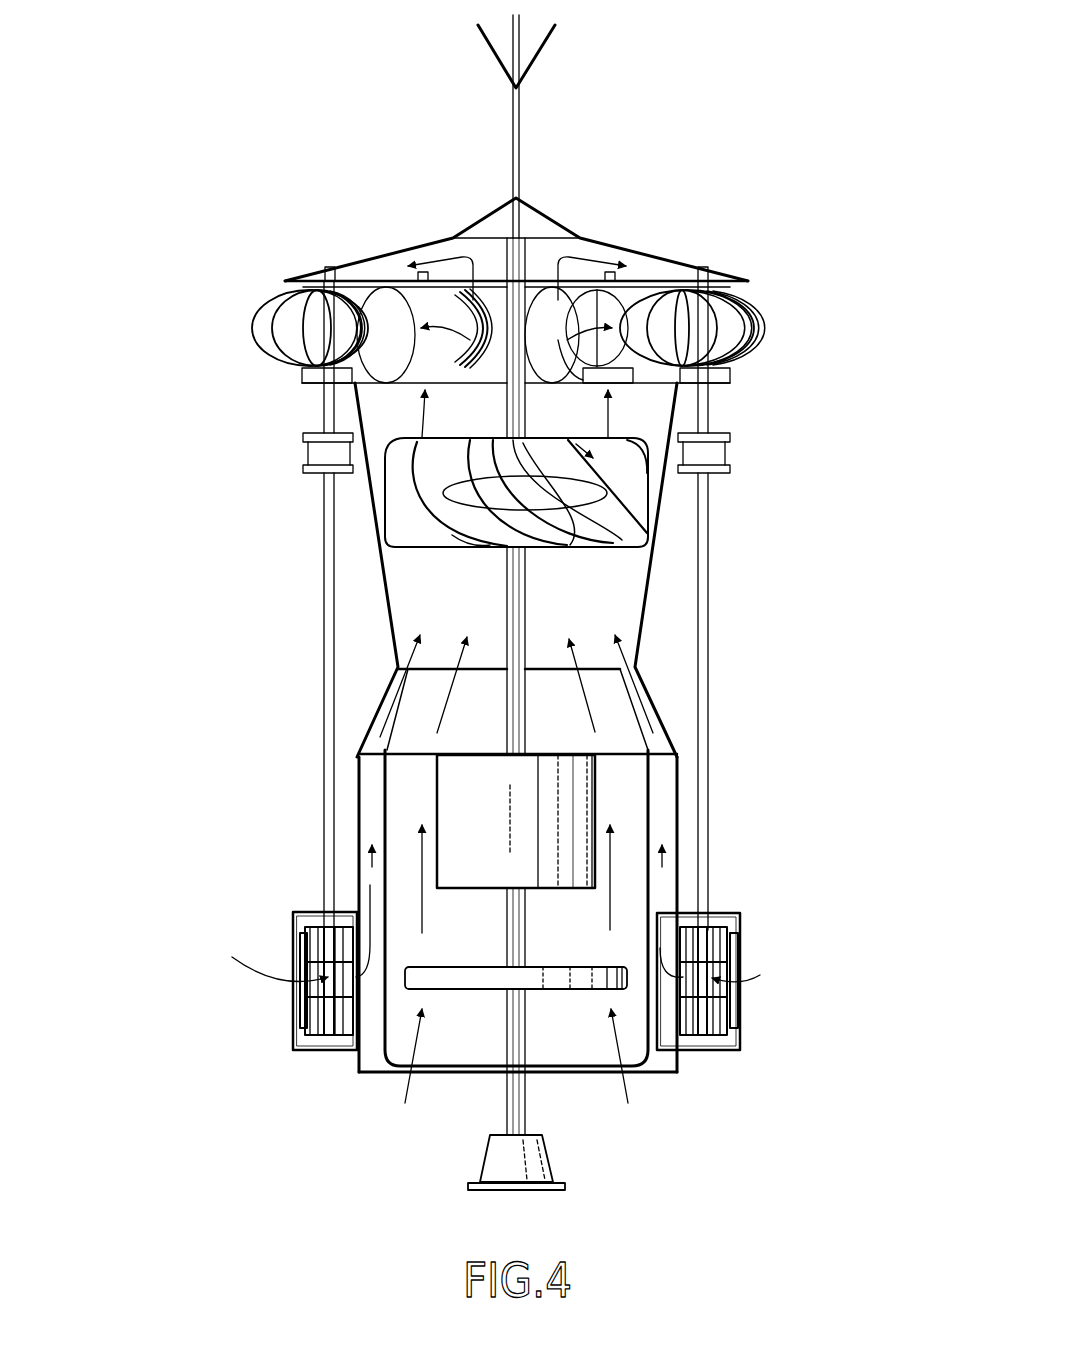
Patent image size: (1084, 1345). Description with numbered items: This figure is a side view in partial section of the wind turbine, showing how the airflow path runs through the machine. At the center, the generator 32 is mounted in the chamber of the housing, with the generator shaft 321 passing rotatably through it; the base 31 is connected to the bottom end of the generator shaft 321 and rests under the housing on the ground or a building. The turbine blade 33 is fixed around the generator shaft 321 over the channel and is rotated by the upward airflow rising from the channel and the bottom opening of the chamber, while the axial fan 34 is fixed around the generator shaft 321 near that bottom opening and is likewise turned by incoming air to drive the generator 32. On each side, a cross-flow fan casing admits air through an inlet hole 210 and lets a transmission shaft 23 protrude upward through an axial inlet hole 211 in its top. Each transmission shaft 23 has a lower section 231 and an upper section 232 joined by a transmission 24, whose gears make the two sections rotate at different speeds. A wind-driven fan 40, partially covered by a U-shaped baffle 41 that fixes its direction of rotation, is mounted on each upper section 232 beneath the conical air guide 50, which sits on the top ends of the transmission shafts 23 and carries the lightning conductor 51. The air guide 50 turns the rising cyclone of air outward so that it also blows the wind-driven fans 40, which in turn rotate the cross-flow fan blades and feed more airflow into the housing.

The lightning conductor 51 is at (516, 113).
The air guide 50 is at (560, 192).
The baffle 41 is at (383, 295).
The wind-driven fan 40 is at (267, 320).
The transmission shaft 23 is at (556, 605).
The upper section 232 is at (706, 418).
The transmission 24 is at (723, 457).
The lower section 231 is at (706, 613).
The generator shaft 321 is at (521, 602).
The turbine blade 33 is at (413, 513).
The generator 32 is at (457, 788).
The axial inlet hole 211 is at (713, 910).
The inlet hole 210 is at (734, 1007).
The axial fan 34 is at (492, 983).
The base 31 is at (548, 1167).